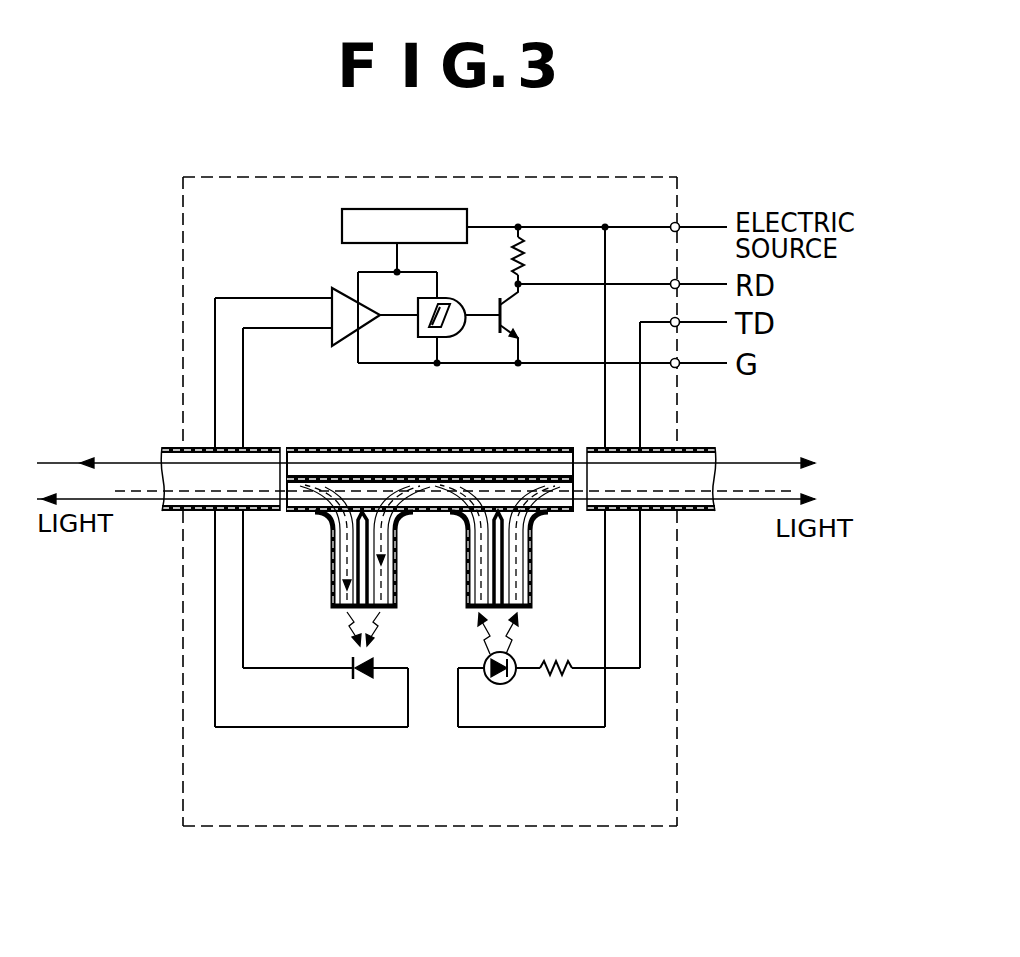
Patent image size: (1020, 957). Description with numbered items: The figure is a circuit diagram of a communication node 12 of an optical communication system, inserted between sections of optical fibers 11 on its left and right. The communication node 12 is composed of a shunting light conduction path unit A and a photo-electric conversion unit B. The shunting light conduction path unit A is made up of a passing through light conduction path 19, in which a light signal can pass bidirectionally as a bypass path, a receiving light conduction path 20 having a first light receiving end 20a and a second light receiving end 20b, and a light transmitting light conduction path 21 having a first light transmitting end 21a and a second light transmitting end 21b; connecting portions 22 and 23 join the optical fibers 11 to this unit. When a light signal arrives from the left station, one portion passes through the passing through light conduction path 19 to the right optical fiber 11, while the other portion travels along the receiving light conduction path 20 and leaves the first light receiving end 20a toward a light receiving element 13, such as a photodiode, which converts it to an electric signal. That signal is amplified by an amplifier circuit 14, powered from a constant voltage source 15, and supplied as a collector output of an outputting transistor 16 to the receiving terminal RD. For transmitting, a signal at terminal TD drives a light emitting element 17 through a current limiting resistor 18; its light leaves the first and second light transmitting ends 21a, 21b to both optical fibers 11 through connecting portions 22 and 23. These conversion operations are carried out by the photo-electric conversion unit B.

The optical fibers 11 is at (172, 446).
The communication node 12 is at (684, 772).
The light receiving element 13 is at (368, 680).
The amplifier circuit 14 is at (343, 290).
The constant voltage source 15 is at (413, 208).
The outputting transistor 16 is at (520, 316).
The light emitting element 17 is at (490, 656).
The resistor 18 is at (556, 672).
The passing through light conduction path 19 is at (308, 447).
The receiving light conduction path 20 is at (341, 564).
The first light receiving end 20a is at (333, 590).
The second light receiving end 20b is at (362, 607).
The light transmitting light conduction path 21 is at (517, 561).
The first light transmitting end 21a is at (490, 590).
The second light transmitting end 21b is at (528, 598).
The connecting portion 22 is at (287, 450).
The connecting portion 23 is at (575, 447).
The shunting light conduction path unit A is at (341, 446).
The photo-electric conversion unit B is at (463, 727).